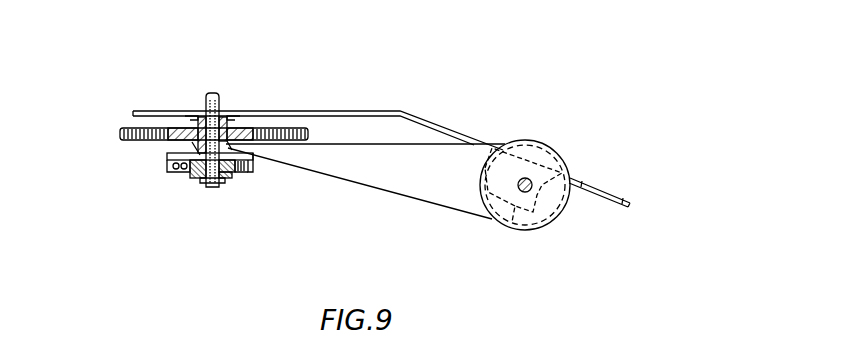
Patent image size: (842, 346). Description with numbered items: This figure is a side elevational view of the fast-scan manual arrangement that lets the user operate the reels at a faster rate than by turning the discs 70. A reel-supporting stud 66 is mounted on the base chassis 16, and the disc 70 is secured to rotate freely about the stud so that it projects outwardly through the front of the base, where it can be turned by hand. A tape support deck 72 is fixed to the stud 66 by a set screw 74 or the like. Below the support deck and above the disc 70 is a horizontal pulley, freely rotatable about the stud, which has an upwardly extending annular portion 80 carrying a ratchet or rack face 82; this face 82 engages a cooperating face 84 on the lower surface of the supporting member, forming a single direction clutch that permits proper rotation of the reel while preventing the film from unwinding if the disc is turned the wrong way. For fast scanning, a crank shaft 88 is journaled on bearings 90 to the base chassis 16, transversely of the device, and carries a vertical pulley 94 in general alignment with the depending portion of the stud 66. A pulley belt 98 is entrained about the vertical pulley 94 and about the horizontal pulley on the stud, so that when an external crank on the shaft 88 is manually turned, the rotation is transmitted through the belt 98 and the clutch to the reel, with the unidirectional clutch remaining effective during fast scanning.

The base chassis 16 is at (143, 111).
The stud 66 is at (208, 93).
The disc 70 is at (120, 134).
The tape support deck 72 is at (198, 182).
The set screw 74 is at (222, 180).
The annular portion 80 is at (170, 150).
The ratchet face 82 is at (172, 174).
The cooperating face 84 is at (181, 171).
The crank shaft 88 is at (528, 179).
The bearing 90 is at (517, 207).
The vertical pulley 94 is at (440, 126).
The pulley belt 98 is at (378, 188).